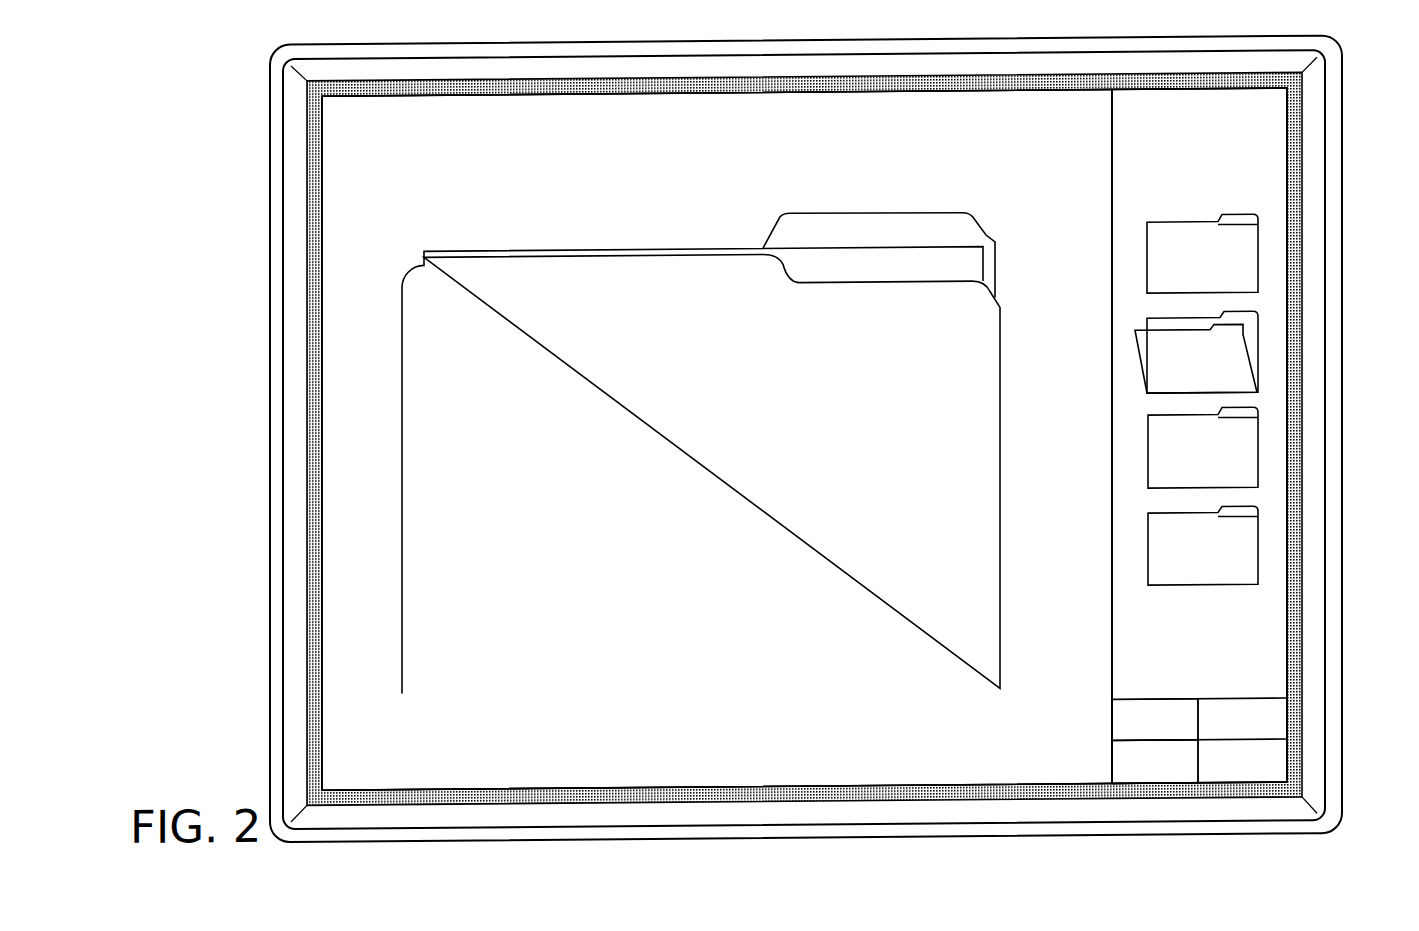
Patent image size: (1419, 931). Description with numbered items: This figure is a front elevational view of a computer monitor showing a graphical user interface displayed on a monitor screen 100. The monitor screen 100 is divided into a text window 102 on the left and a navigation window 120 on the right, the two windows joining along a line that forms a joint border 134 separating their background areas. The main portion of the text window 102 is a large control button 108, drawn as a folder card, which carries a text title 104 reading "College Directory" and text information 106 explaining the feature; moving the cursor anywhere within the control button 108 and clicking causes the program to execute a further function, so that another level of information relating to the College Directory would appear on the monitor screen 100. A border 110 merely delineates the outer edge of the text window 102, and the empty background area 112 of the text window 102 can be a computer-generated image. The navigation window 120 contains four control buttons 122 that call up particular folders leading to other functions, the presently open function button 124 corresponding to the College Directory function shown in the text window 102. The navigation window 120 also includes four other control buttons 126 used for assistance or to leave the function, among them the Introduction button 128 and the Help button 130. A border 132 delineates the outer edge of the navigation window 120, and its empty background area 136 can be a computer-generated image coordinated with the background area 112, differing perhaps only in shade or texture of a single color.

The monitor screen 100 is at (265, 503).
The text window 102 is at (585, 119).
The text title 104 is at (869, 226).
The text information 106 is at (504, 331).
The control button 108 is at (708, 624).
The border 110 is at (593, 789).
The background area 112 is at (1078, 170).
The navigation window 120 is at (1211, 455).
The control buttons 122 is at (1227, 319).
The open function button 124 is at (1255, 352).
The control buttons 126 is at (1190, 739).
The Introduction button 128 is at (1177, 703).
The Help button 130 is at (1115, 778).
The border 132 is at (1287, 628).
The joint border 134 is at (1110, 113).
The background area 136 is at (1206, 141).